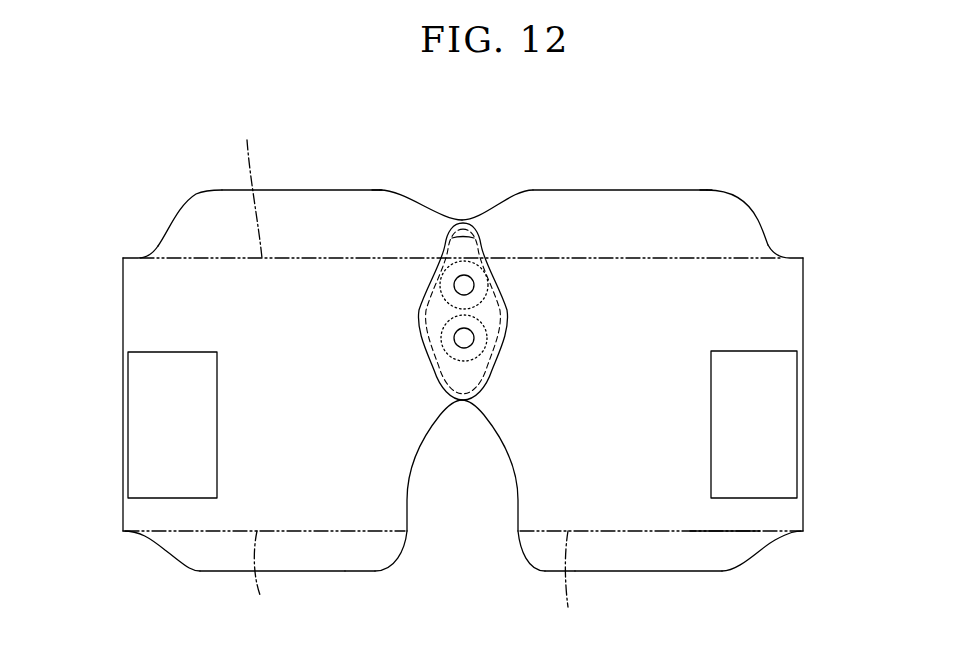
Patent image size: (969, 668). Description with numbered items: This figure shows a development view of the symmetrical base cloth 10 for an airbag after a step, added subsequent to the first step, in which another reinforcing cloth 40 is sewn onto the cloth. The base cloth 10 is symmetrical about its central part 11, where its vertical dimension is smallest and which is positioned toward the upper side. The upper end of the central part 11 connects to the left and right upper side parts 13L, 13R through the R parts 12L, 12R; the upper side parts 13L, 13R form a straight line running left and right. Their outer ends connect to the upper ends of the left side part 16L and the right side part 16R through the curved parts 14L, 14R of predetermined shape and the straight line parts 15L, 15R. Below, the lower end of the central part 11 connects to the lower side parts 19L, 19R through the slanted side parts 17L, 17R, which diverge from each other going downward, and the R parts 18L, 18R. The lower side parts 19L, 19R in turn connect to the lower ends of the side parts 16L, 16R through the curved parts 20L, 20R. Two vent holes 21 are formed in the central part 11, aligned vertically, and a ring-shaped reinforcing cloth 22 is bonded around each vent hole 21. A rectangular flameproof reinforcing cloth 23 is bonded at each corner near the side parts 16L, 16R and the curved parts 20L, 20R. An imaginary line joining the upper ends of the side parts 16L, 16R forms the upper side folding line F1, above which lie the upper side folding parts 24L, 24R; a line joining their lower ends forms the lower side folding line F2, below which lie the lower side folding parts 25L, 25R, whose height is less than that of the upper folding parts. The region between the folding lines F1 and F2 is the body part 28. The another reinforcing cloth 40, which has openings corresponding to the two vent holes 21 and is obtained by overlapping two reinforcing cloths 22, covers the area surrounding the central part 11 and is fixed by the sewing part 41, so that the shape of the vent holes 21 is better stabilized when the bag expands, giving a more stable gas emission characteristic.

The base cloth 10 is at (626, 178).
The central part 11 is at (467, 238).
The R part 12L is at (445, 208).
The R part 12R is at (493, 205).
The upper side part 13L is at (320, 190).
The upper side part 13R is at (670, 188).
The curved part 14L is at (184, 205).
The curved part 14R is at (745, 205).
The straight line part 15L is at (138, 256).
The straight line part 15R is at (780, 256).
The left side part 16L is at (123, 288).
The right side part 16R is at (803, 308).
The slanted side part 17L is at (432, 433).
The slanted side part 17R is at (487, 423).
The R part 18L is at (403, 550).
The R part 18R is at (523, 557).
The lower side part 19L is at (325, 573).
The lower side part 19R is at (673, 573).
The curved part 20L is at (163, 547).
The curved part 20R is at (767, 542).
The vent hole 21 is at (473, 285).
The reinforcing cloth 22 is at (428, 296).
The reinforcing cloth 23 is at (217, 430).
The upper side folding part 24L is at (367, 218).
The upper side folding part 24R is at (707, 203).
The lower side folding part 25L is at (367, 555).
The lower side folding part 25R is at (617, 555).
The body part 28 is at (683, 498).
The another reinforcing cloth 40 is at (493, 360).
The sewing part 41 is at (483, 374).
The upper side folding line F1 is at (252, 193).
The lower side folding line F2 is at (409, 585).